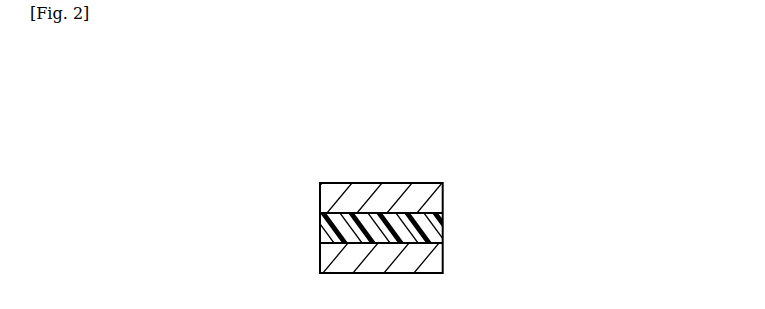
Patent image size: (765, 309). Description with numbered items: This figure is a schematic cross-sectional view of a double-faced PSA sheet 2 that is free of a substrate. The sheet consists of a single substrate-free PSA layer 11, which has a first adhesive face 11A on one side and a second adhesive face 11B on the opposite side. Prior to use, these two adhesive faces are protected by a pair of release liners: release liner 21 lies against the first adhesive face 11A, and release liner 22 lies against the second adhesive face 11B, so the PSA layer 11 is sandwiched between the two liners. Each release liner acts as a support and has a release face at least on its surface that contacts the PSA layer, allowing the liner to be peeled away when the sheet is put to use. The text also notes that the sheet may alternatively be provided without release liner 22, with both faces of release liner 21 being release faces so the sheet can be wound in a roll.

The double-faced PSA sheet 2 is at (558, 186).
The release liner 21 is at (443, 197).
The PSA layer 11 is at (443, 230).
The release liner 22 is at (443, 258).
The first adhesive face 11A is at (327, 212).
The second adhesive face 11B is at (338, 244).